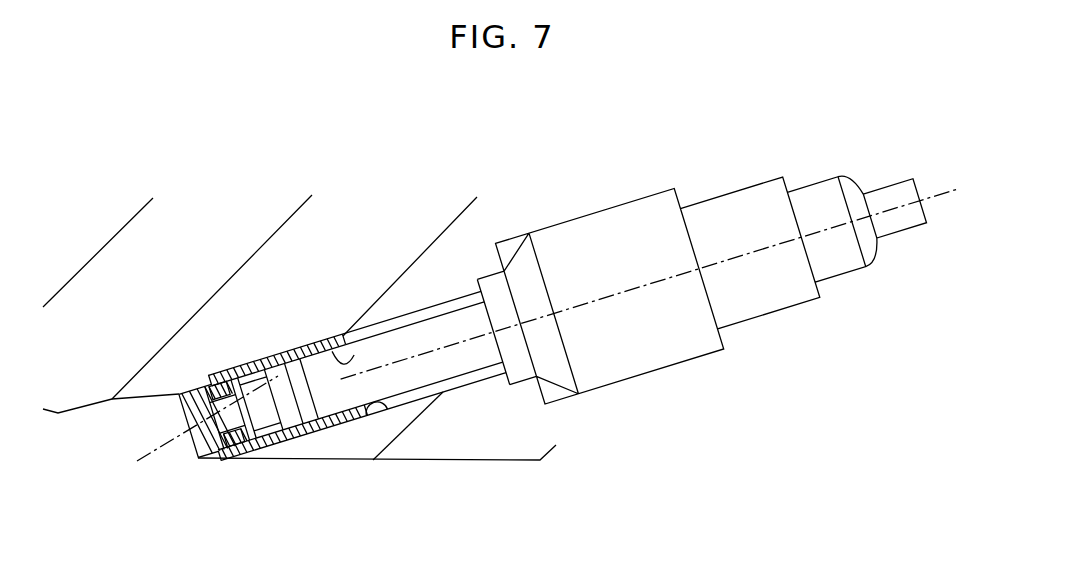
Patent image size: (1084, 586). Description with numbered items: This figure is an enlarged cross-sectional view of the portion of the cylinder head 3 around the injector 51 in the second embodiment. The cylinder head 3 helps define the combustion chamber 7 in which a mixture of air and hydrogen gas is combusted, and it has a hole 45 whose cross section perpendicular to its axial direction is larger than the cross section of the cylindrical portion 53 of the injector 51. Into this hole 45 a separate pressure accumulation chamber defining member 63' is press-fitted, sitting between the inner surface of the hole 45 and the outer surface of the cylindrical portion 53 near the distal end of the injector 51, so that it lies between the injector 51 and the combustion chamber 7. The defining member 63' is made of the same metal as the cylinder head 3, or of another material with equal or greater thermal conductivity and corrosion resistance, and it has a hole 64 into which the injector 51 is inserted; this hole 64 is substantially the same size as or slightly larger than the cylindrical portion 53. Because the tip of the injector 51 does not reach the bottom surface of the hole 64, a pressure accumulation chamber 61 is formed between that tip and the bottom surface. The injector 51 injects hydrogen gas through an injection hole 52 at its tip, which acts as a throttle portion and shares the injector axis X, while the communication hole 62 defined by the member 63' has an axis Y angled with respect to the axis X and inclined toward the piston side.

The cylinder head 3 is at (195, 230).
The combustion chamber 7 is at (85, 425).
The hole 45 is at (392, 416).
The injector 51 is at (695, 312).
The injection hole 52 is at (264, 357).
The cylindrical portion 53 is at (463, 358).
The pressure accumulation chamber 61 is at (258, 447).
The communication hole 62 is at (187, 448).
The pressure accumulation chamber defining member 63' is at (281, 445).
The hole 64 is at (350, 333).
The axis of the injector X is at (765, 248).
The axis of the communication hole Y is at (137, 461).